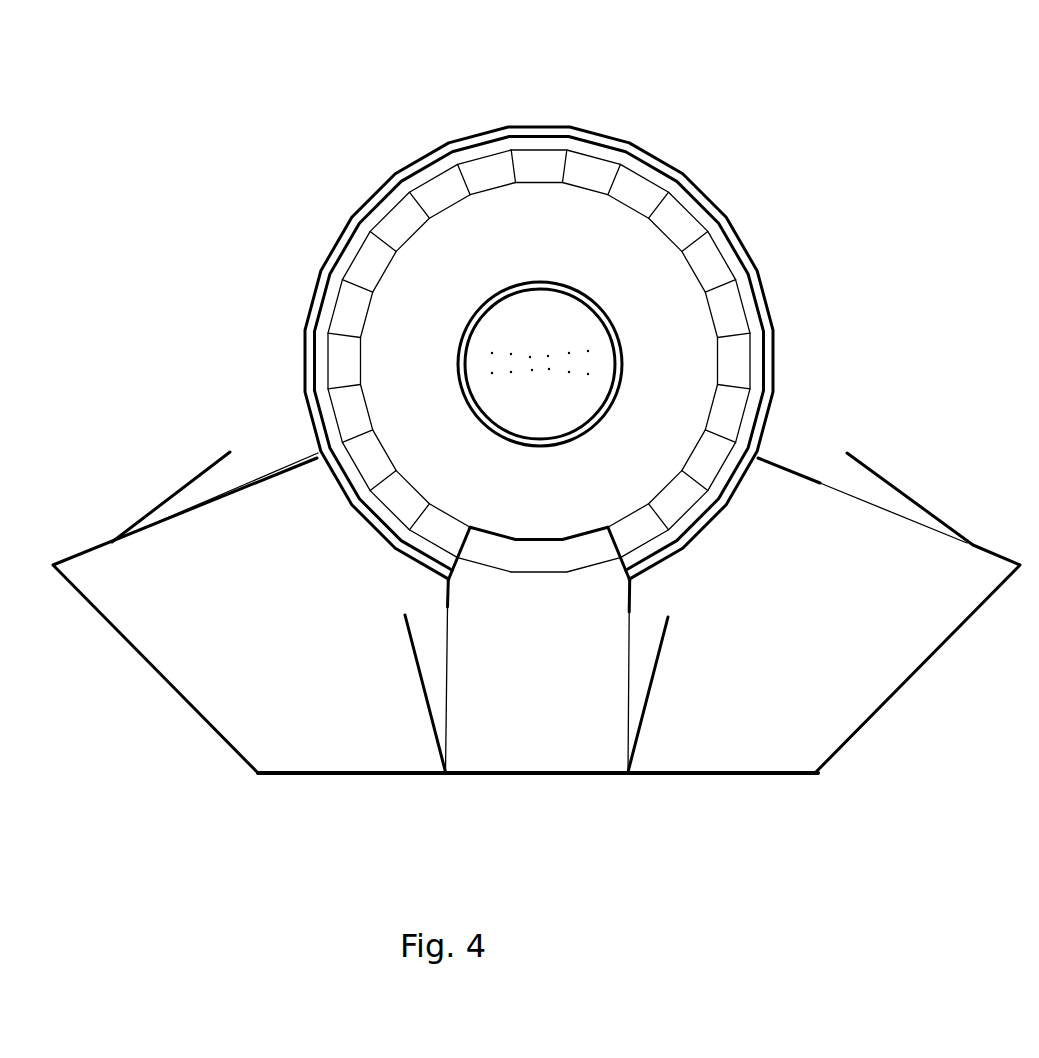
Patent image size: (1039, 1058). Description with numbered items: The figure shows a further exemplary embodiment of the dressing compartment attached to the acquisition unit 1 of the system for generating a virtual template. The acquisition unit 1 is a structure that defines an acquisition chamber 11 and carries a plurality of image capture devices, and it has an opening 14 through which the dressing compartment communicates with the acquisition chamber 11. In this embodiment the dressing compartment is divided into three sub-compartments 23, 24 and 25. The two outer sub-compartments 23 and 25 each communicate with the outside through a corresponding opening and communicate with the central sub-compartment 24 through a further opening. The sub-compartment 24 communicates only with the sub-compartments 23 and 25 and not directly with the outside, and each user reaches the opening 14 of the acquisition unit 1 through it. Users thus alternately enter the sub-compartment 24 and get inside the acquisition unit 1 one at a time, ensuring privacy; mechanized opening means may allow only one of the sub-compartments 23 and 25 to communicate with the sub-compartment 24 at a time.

The acquisition unit 1 is at (756, 247).
The acquisition chamber 11 is at (578, 230).
The opening 14 is at (548, 532).
The sub-compartment 23 is at (769, 743).
The sub-compartment 24 is at (590, 751).
The sub-compartment 25 is at (270, 760).